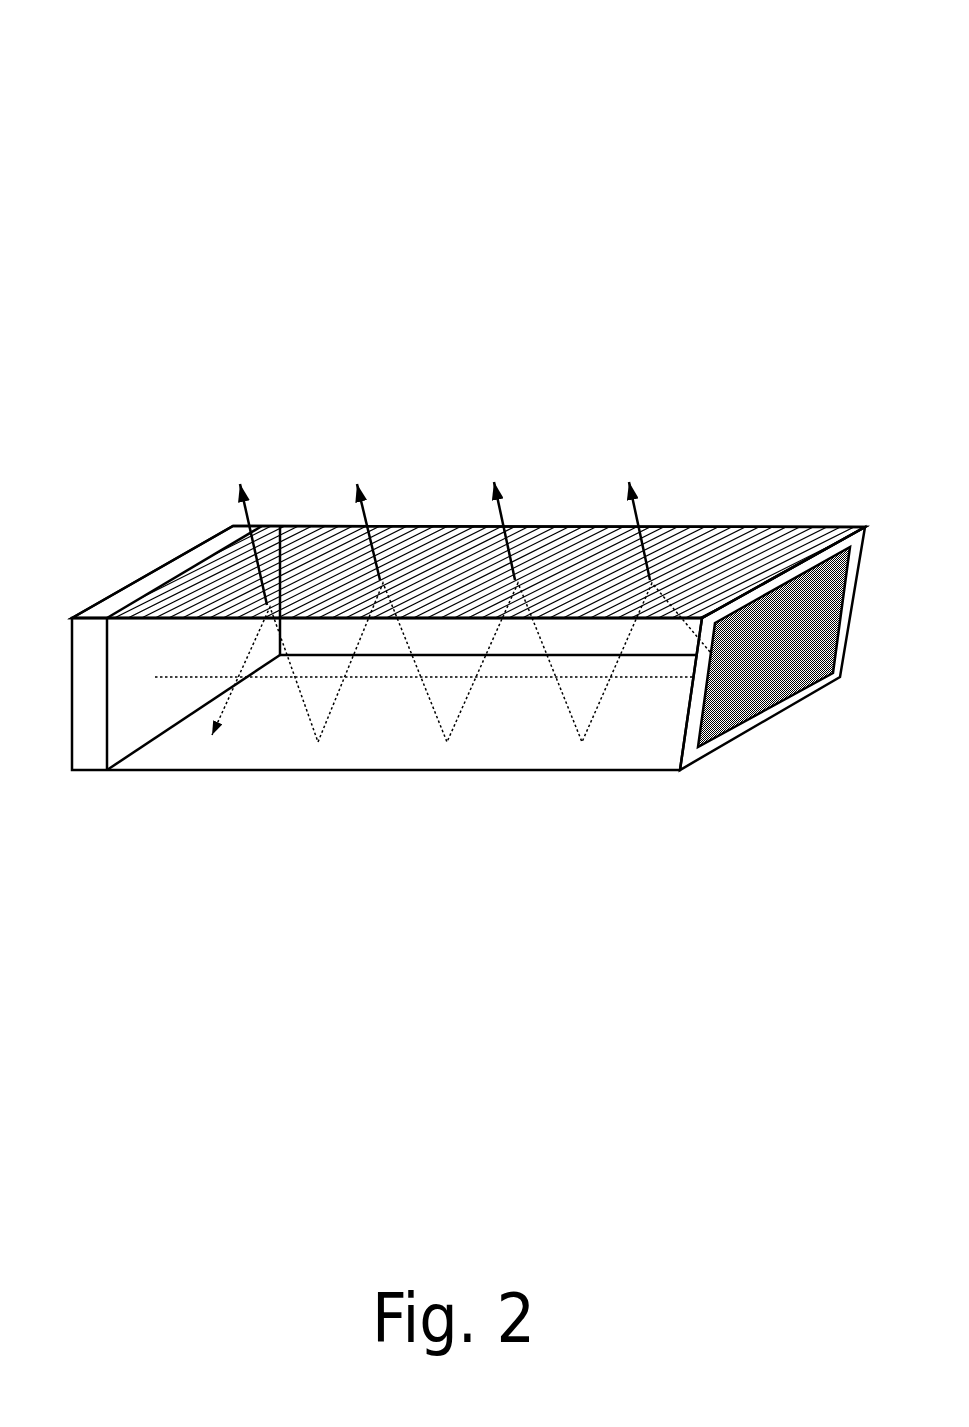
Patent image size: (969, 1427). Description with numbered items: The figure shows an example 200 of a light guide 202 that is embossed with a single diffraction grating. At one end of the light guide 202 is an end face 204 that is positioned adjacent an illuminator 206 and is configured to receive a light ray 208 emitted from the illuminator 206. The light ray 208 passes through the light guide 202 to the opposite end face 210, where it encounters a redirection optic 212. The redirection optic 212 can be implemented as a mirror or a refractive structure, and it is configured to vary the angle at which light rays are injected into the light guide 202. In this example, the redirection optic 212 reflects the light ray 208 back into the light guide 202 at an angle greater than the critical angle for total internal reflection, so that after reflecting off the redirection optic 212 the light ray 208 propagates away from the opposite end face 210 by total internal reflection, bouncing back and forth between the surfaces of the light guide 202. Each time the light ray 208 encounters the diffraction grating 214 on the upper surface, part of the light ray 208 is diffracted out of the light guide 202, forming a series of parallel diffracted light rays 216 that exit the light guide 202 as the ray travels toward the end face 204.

The example 200 is at (115, 67).
The light guide 202 is at (800, 525).
The end face 204 is at (124, 736).
The illuminator 206 is at (112, 595).
The light ray 208 is at (207, 677).
The opposite end face 210 is at (689, 758).
The redirection optic 212 is at (776, 678).
The diffraction grating 214 is at (476, 550).
The parallel diffracted light rays 216 is at (237, 468).